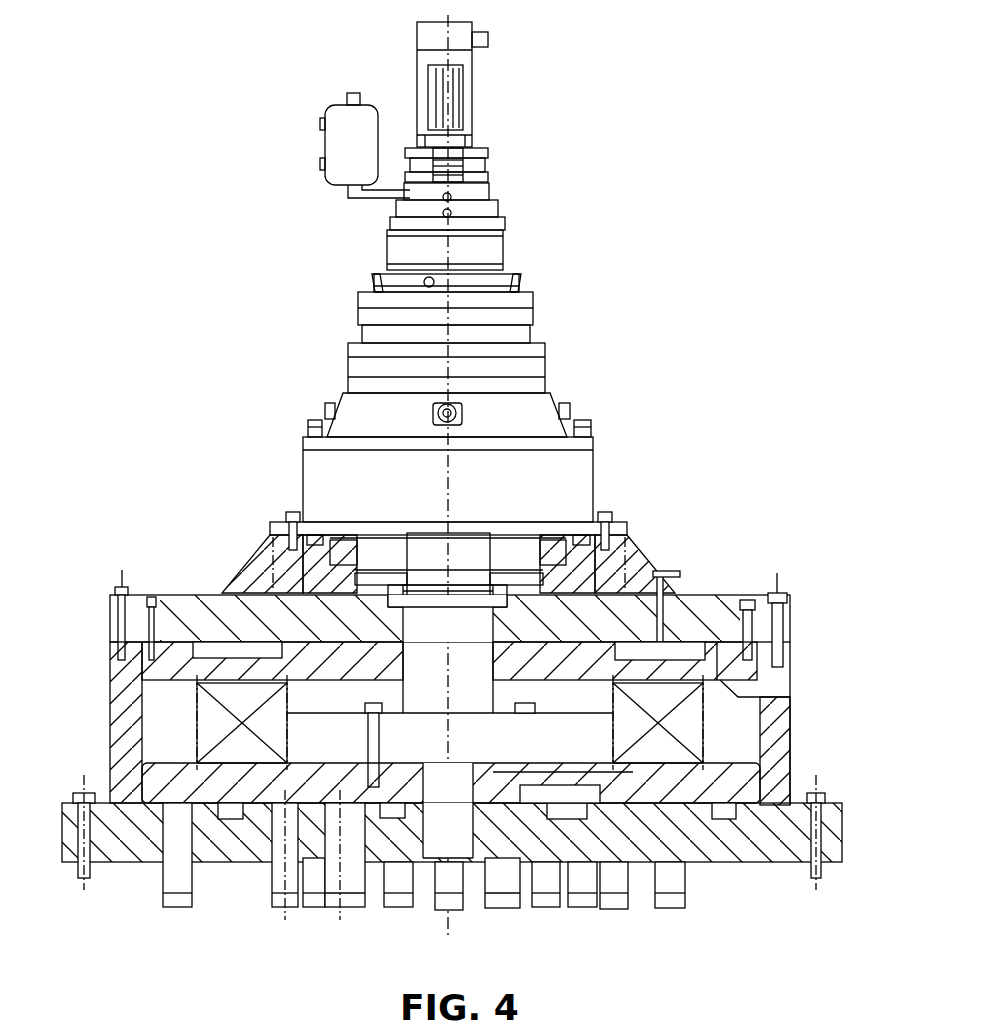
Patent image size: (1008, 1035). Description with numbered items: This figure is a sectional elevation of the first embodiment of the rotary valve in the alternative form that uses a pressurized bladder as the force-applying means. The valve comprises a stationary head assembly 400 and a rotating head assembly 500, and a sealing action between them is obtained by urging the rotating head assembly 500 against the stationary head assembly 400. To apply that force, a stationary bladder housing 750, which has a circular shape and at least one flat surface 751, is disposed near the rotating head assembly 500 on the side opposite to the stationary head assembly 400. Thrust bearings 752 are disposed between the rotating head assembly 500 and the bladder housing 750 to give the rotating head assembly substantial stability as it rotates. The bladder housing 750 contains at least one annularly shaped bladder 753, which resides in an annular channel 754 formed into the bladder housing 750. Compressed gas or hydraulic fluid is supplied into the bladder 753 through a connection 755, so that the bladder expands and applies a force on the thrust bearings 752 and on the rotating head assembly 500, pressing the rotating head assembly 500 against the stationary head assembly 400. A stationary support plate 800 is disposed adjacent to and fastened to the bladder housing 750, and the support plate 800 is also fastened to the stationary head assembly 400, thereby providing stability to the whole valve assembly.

The stationary head assembly 400 is at (733, 827).
The rotating head assembly 500 is at (730, 778).
The stationary bladder housing 750 is at (730, 670).
The flat surface 751 is at (732, 690).
The thrust bearings 752 is at (705, 737).
The annularly shaped bladder 753 is at (775, 592).
The annular channel 754 is at (673, 653).
The connection 755 is at (670, 570).
The stationary support plate 800 is at (690, 593).